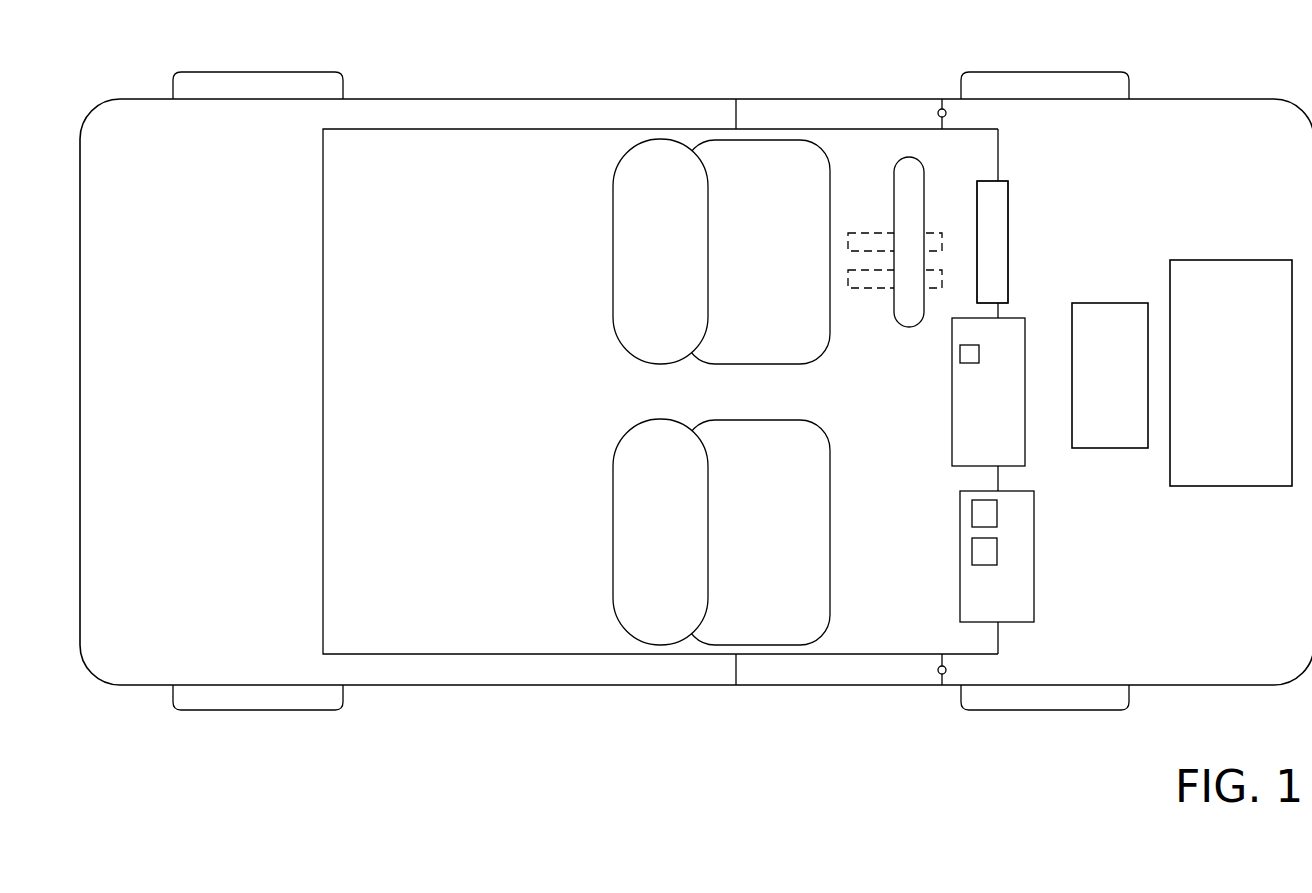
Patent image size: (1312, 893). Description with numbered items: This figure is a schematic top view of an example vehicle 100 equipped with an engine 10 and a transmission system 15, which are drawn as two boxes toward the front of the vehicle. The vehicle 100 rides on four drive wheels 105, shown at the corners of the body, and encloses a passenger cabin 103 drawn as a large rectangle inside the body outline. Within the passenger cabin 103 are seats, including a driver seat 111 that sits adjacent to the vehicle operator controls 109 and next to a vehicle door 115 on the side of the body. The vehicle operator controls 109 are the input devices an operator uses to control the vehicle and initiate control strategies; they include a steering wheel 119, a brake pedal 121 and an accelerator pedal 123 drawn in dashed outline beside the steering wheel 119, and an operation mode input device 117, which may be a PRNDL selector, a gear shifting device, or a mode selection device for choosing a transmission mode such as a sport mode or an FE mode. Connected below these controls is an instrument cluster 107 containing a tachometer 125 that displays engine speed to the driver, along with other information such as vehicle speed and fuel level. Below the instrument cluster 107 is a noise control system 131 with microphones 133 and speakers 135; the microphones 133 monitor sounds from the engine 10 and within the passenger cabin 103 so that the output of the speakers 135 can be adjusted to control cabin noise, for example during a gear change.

The vehicle 100 is at (1190, 68).
The passenger cabin 103 is at (323, 392).
The drive wheels 105 is at (257, 72).
The instrument cluster 107 is at (988, 392).
The vehicle operator controls 109 is at (984, 170).
The driver seat 111 is at (613, 214).
The vehicle door 115 is at (838, 99).
The operation mode input device 117 is at (1010, 205).
The steering wheel 119 is at (960, 181).
The brake pedal 121 is at (890, 233).
The accelerator pedal 123 is at (890, 288).
The tachometer 125 is at (958, 353).
The noise control system 131 is at (1034, 514).
The microphones 133 is at (970, 513).
The speakers 135 is at (968, 552).
The transmission system 15 is at (1110, 375).
The engine 10 is at (1231, 373).